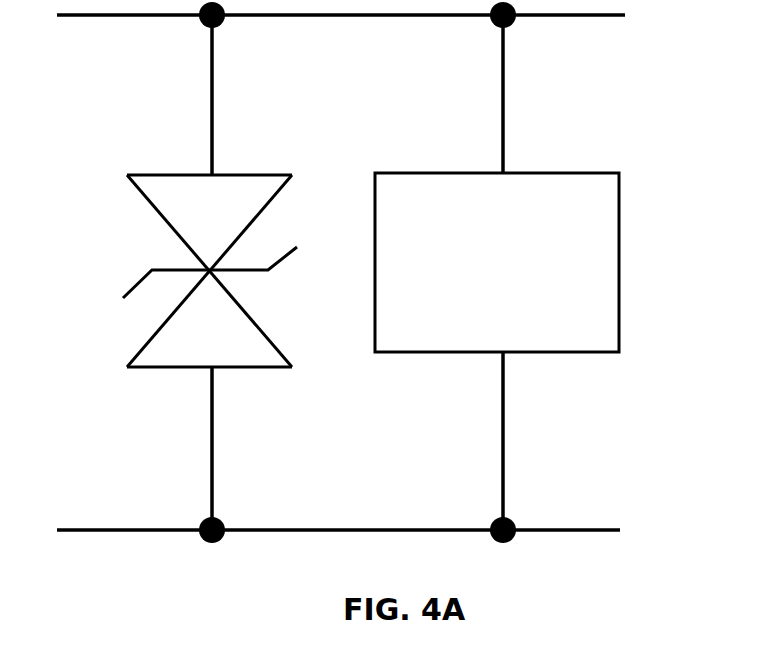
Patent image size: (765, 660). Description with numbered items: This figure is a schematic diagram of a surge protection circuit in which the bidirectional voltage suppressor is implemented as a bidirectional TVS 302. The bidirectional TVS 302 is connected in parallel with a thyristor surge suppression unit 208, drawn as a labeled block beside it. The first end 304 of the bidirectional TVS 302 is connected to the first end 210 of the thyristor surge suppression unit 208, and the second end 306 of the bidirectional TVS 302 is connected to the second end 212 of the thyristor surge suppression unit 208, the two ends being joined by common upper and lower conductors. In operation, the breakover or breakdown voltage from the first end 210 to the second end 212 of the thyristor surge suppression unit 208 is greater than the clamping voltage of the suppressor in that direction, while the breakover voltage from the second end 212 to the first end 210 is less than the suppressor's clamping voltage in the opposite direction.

The thyristor surge suppression unit 208 is at (620, 255).
The first end of the thyristor surge suppression unit 210 is at (503, 72).
The second end of the thyristor surge suppression unit 212 is at (503, 392).
The bidirectional TVS 302 is at (214, 274).
The first end of the bidirectional TVS 304 is at (212, 71).
The second end of the bidirectional TVS 306 is at (212, 446).